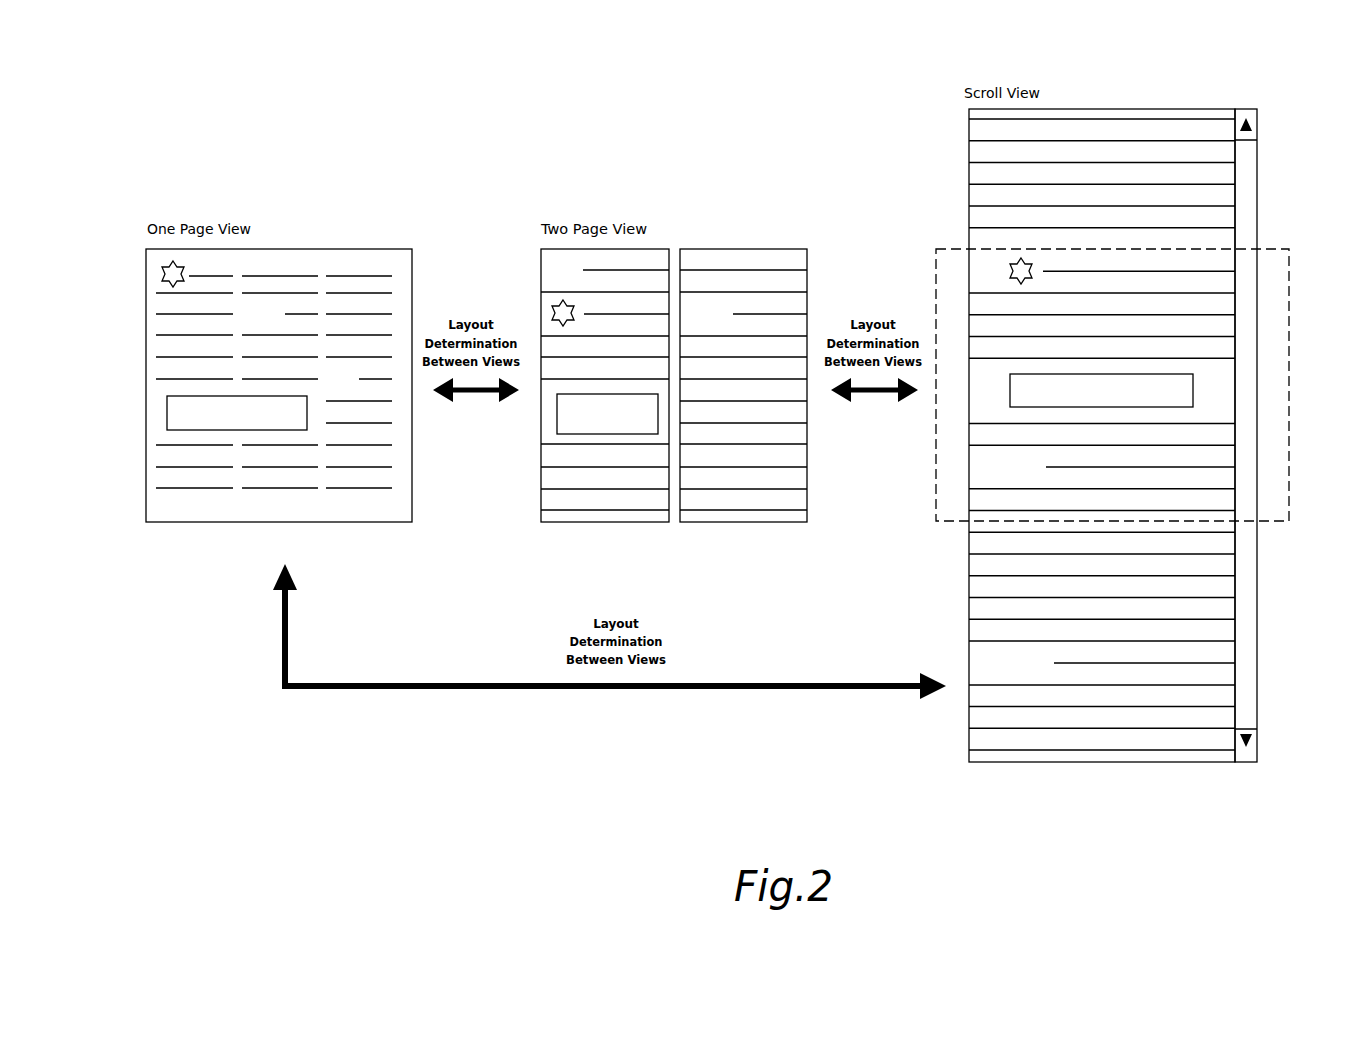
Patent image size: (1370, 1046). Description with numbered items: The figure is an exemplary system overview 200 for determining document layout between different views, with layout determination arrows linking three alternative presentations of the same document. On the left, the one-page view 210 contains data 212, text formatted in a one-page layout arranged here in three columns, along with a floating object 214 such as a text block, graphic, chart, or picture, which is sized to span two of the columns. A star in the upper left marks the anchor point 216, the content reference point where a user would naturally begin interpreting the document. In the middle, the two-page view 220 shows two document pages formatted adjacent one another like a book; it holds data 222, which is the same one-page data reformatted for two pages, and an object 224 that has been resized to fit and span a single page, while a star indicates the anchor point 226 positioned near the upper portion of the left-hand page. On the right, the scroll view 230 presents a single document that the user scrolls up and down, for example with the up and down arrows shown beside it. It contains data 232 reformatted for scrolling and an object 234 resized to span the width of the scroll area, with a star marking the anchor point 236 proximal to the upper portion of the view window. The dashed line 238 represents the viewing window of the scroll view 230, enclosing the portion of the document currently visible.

The system overview 200 is at (237, 791).
The one-page view 210 is at (167, 166).
The data 212 is at (340, 273).
The object 214 is at (167, 411).
The anchor point 216 is at (161, 280).
The two-page view 220 is at (551, 193).
The data 222 is at (732, 268).
The object 224 is at (557, 410).
The anchor point 226 is at (551, 307).
The scroll view 230 is at (1017, 68).
The data 232 is at (1217, 202).
The object 234 is at (1192, 400).
The anchor point 236 is at (1009, 263).
The dashed line 238 is at (935, 519).